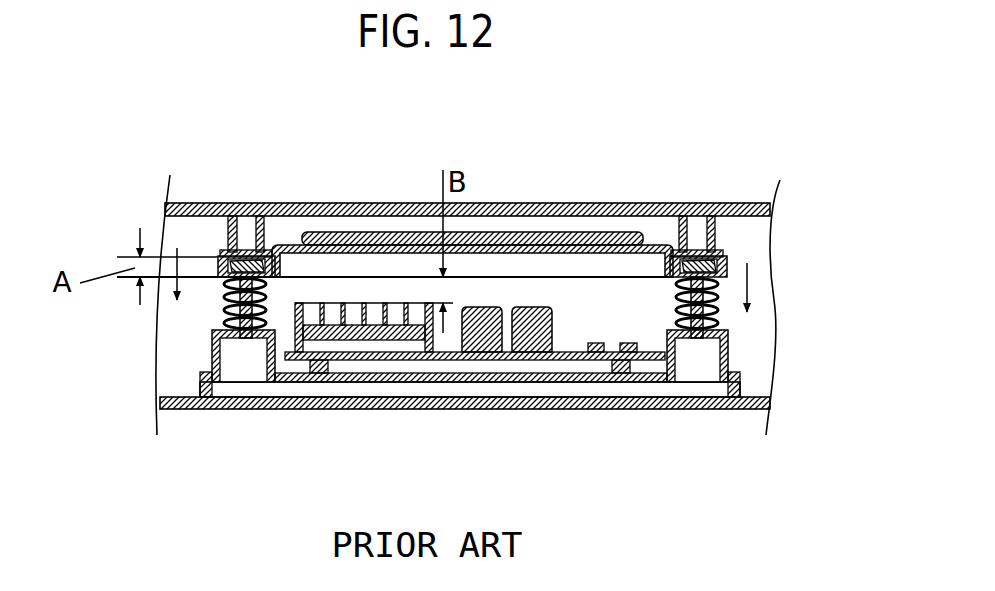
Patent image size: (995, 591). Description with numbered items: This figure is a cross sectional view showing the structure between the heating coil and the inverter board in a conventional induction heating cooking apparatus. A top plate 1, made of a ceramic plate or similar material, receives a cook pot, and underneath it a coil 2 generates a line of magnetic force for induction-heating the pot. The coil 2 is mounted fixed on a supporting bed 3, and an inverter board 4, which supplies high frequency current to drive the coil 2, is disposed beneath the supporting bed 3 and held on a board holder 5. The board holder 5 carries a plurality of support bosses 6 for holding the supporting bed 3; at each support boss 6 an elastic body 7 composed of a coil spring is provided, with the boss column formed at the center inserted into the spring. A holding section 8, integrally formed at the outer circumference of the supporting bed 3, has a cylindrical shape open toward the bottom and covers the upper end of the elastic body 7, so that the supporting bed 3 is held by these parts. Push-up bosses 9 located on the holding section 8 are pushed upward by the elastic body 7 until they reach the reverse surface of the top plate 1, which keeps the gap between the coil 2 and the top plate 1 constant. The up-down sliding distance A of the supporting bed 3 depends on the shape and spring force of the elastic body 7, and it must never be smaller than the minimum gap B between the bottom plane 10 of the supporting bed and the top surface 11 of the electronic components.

The top plate 1 is at (418, 208).
The coil 2 is at (335, 233).
The supporting bed 3 is at (282, 245).
The inverter board 4 is at (527, 358).
The board holder 5 is at (588, 390).
The support boss 6 is at (212, 355).
The elastic body 7 is at (224, 312).
The holding section 8 is at (220, 250).
The push-up boss 9 is at (228, 222).
The bottom plane 10 is at (622, 279).
The top surface 11 is at (370, 305).